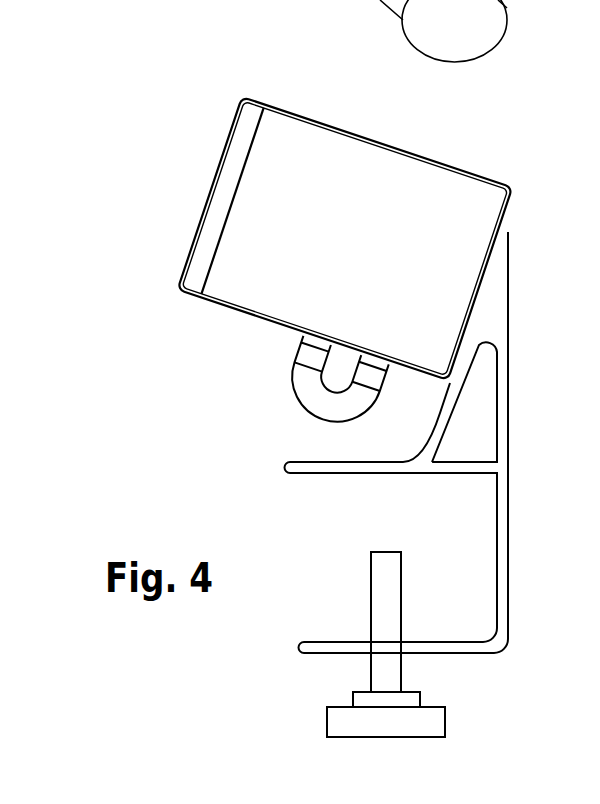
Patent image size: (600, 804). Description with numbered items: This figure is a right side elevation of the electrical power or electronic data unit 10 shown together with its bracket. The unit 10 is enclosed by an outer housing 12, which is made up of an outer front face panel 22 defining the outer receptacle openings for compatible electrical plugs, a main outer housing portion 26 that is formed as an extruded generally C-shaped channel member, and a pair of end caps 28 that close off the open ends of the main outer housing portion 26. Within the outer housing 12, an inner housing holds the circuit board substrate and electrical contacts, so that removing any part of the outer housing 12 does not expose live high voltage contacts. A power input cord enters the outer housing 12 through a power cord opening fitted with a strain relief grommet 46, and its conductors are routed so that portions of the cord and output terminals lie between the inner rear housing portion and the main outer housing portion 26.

The electrical power or electronic data unit 10 is at (77, 73).
The outer housing 12 is at (466, 166).
The outer front face panel 22 is at (222, 163).
The main outer housing portion 26 is at (318, 118).
The end caps 28 is at (373, 175).
The strain relief grommet 46 is at (297, 397).